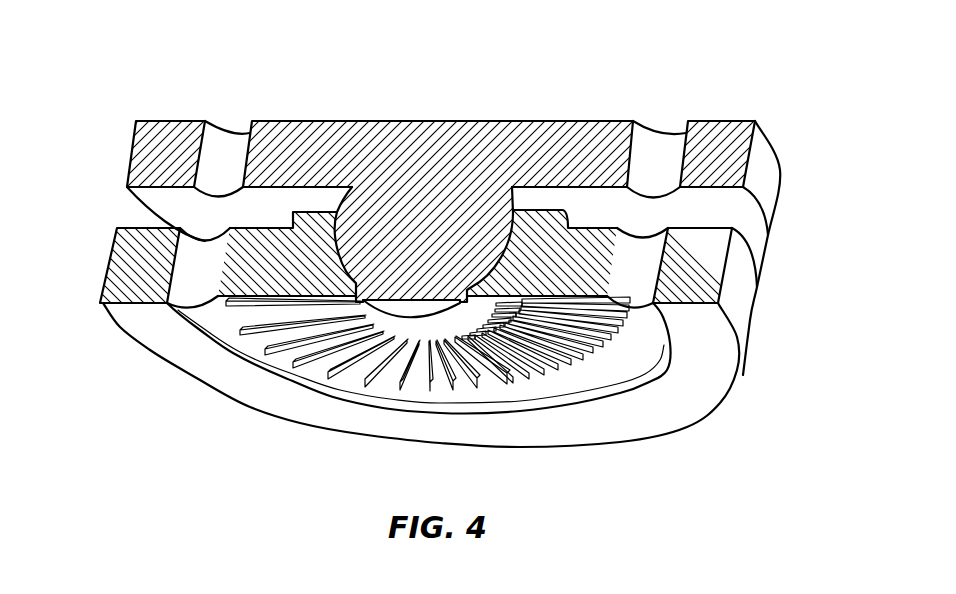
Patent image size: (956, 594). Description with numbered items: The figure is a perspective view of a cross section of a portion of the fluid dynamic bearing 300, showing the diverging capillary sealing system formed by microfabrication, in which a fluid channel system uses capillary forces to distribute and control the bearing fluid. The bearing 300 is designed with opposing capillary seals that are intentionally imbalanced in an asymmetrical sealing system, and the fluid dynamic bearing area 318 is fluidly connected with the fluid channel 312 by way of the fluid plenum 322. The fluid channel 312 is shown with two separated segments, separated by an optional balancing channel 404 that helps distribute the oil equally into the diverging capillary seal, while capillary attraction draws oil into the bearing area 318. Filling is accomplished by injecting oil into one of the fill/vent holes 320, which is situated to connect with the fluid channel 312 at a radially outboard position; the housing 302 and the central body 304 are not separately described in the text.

The fluid dynamic bearing 300 is at (226, 64).
The housing 302 is at (707, 270).
The central hub body 304 is at (438, 235).
The fluid channel 312 is at (430, 388).
The fluid dynamic bearing area 318 is at (343, 254).
The fill/vent hole 320 is at (198, 285).
The fluid plenum 322 is at (463, 300).
The balancing channel 404 is at (521, 312).